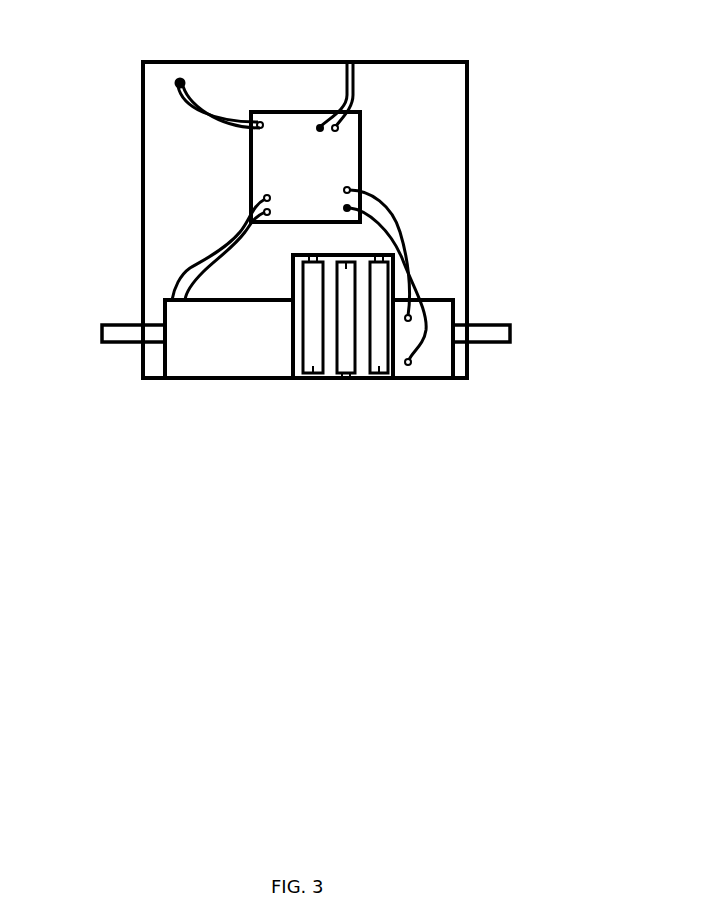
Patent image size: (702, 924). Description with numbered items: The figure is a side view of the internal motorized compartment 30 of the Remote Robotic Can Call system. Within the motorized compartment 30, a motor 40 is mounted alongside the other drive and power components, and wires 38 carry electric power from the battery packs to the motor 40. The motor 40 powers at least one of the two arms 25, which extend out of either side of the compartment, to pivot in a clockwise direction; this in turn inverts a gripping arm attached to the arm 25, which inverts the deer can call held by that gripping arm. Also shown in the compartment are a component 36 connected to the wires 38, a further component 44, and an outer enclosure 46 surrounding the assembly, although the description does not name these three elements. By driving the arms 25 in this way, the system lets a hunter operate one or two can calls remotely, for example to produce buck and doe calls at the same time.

The arms 25 is at (100, 333).
The internal motorized compartment 30 is at (313, 373).
The controller 36 is at (332, 155).
The wires 38 is at (237, 112).
The motor 40 is at (208, 382).
The block 44 is at (427, 362).
The housing 46 is at (472, 205).